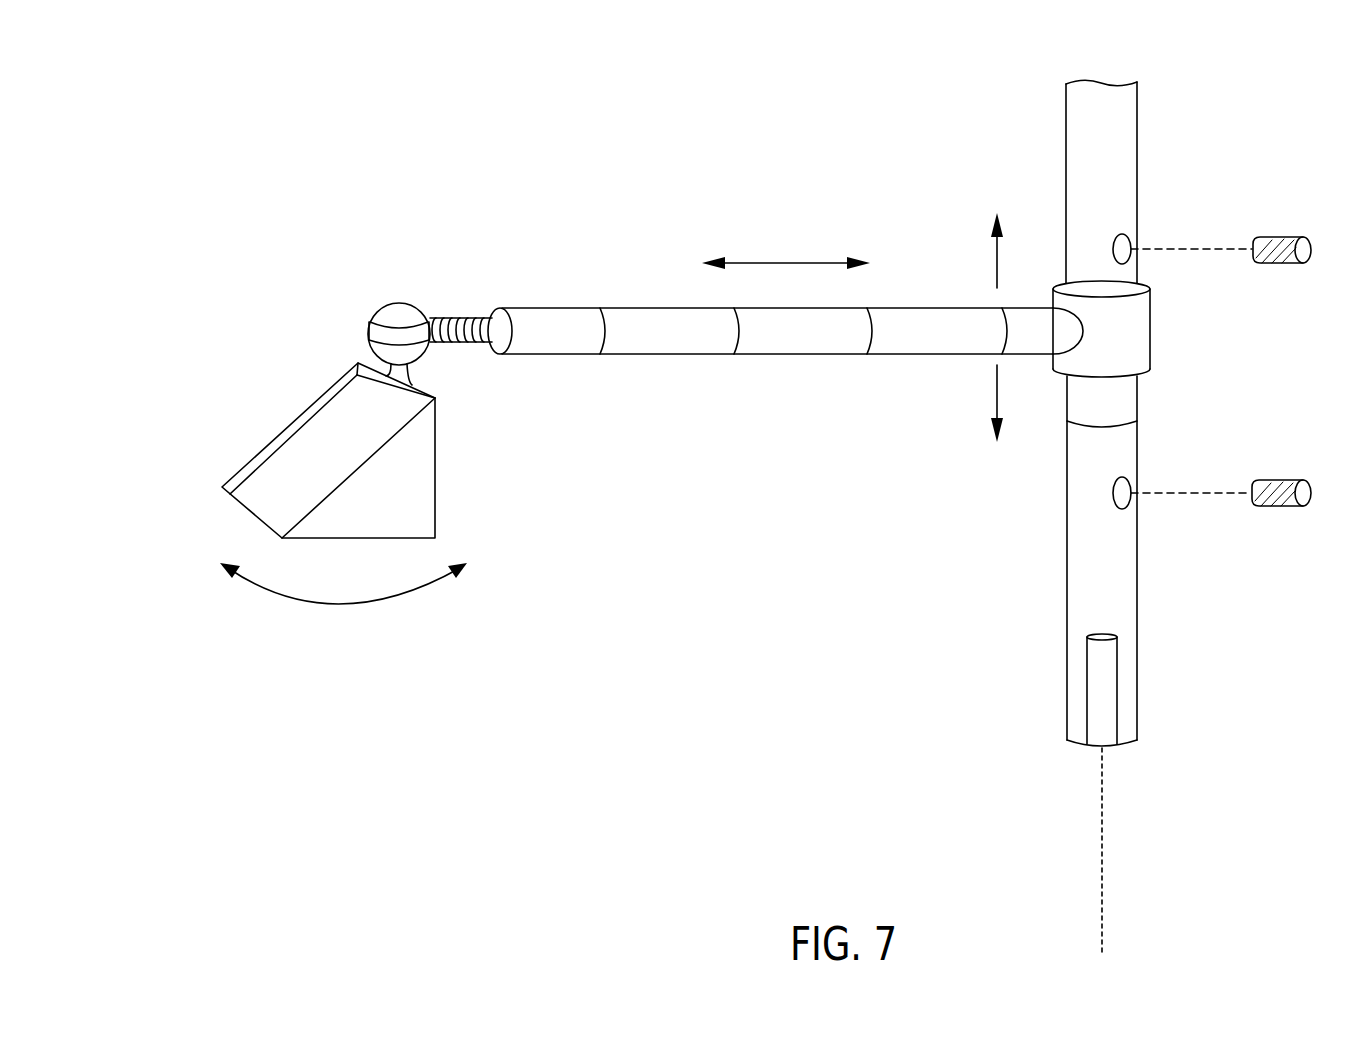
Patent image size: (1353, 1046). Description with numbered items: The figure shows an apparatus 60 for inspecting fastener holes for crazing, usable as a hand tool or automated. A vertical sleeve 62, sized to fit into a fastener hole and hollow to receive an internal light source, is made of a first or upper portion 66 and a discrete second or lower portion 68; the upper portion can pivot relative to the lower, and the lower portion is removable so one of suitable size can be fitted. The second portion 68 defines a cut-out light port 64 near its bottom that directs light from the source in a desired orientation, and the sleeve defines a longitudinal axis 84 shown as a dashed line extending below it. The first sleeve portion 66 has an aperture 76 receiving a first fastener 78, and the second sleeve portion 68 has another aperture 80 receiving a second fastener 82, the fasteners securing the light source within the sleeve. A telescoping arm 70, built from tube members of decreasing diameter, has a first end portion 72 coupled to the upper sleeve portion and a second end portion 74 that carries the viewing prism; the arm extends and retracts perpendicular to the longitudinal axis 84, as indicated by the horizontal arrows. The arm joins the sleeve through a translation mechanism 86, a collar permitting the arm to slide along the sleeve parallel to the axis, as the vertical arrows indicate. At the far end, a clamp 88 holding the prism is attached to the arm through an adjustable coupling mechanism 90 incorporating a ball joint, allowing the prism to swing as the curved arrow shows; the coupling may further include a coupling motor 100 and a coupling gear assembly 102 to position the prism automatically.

The apparatus 60 is at (606, 106).
The sleeve 62 is at (1272, 386).
The cut-out light port 64 is at (1117, 672).
The first sleeve portion 66 is at (1137, 156).
The second sleeve portion 68 is at (1137, 606).
The arm 70 is at (650, 308).
The first end portion 72 is at (952, 381).
The second end portion 74 is at (557, 392).
The aperture 76 is at (1130, 239).
The first fastener 78 is at (1283, 236).
The aperture 80 is at (1129, 484).
The second fastener 82 is at (1283, 479).
The longitudinal axis 84 is at (1105, 858).
The translation mechanism 86 is at (1183, 330).
The clamp 88 is at (475, 489).
The adjustable coupling mechanism 90 is at (437, 290).
The coupling motor 100 is at (423, 282).
The coupling gear assembly 102 is at (448, 293).